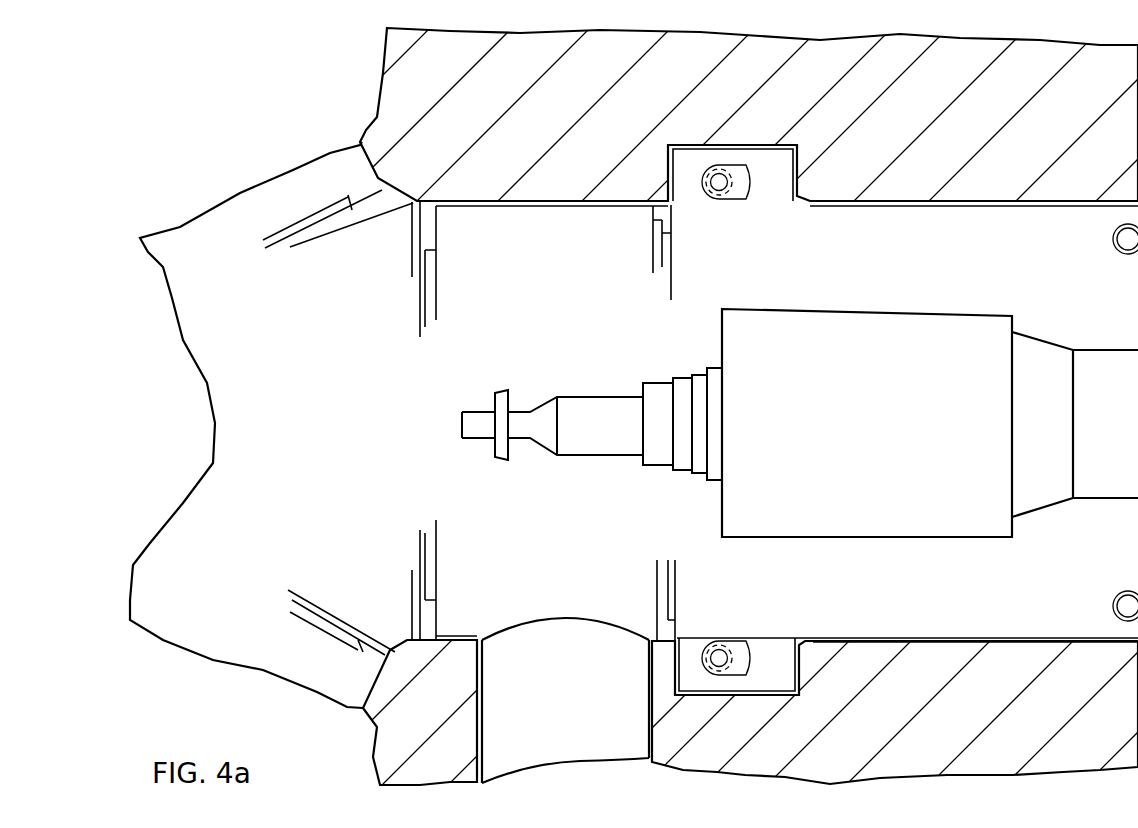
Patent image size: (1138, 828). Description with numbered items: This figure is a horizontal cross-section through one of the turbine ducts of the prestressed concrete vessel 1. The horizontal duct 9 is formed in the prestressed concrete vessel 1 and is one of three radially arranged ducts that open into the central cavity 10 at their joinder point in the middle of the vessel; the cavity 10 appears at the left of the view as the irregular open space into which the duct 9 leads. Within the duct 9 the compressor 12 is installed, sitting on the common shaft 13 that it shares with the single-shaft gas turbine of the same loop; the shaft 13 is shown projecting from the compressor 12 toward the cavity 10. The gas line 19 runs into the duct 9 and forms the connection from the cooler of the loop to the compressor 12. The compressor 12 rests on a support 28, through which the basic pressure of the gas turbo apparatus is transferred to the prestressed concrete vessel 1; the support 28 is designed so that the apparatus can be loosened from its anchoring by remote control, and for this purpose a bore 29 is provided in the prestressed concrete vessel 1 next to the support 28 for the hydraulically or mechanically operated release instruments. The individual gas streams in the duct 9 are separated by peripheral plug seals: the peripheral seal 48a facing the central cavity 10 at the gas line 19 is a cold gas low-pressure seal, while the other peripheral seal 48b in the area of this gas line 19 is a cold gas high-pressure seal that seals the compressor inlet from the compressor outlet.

The prestressed concrete vessel 1 is at (935, 111).
The horizontal duct 9 is at (869, 275).
The cavity 10 is at (321, 325).
The compressor 12 is at (943, 335).
The common shaft 13 is at (598, 403).
The gas line 19 is at (608, 710).
The support 28 is at (787, 655).
The bore 29 is at (725, 660).
The peripheral seal 48a is at (430, 227).
The peripheral seal 48b is at (668, 227).